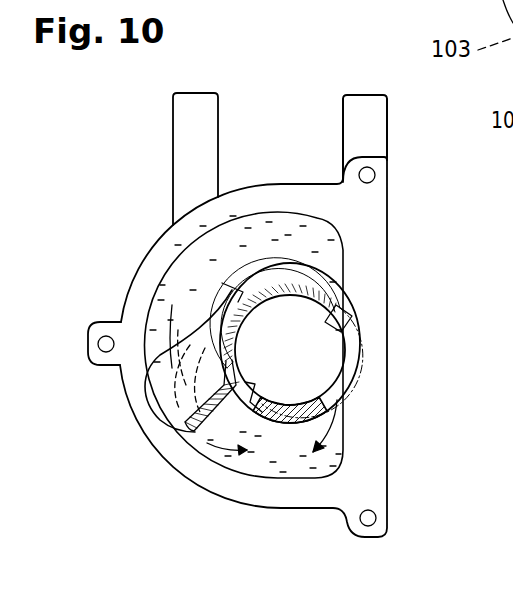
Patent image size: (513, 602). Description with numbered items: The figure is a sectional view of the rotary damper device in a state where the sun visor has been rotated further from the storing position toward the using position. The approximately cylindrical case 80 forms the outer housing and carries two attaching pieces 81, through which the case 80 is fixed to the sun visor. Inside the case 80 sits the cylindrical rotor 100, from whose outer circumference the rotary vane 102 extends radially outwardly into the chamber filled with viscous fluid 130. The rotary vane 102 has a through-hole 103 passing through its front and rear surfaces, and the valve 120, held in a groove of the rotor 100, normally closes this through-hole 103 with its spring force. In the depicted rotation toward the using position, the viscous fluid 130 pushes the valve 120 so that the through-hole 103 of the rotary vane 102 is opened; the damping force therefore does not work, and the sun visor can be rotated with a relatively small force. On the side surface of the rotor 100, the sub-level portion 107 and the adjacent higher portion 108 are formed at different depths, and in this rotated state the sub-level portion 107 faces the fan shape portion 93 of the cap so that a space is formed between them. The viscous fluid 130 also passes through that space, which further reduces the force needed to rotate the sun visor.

The case 80 is at (378, 253).
The attaching pieces 81 is at (196, 104).
The fan shape portion 93 is at (352, 382).
The rotor 100 is at (362, 350).
The rotary vane 102 is at (180, 383).
The through-hole 103 is at (163, 367).
The sub-level portion 107 is at (357, 337).
The higher portion 108 is at (283, 427).
The valve 120 is at (233, 420).
The viscous fluid 130 is at (187, 277).